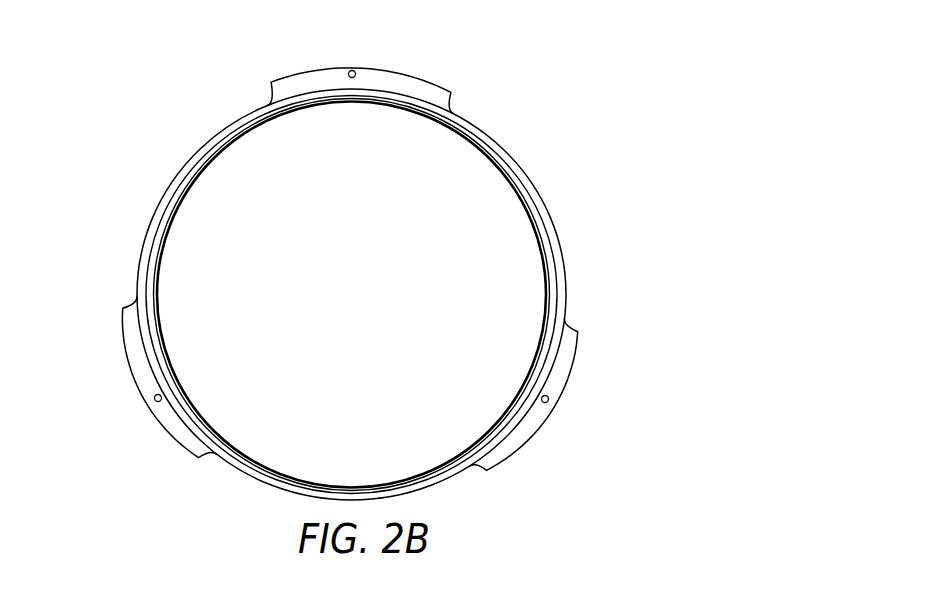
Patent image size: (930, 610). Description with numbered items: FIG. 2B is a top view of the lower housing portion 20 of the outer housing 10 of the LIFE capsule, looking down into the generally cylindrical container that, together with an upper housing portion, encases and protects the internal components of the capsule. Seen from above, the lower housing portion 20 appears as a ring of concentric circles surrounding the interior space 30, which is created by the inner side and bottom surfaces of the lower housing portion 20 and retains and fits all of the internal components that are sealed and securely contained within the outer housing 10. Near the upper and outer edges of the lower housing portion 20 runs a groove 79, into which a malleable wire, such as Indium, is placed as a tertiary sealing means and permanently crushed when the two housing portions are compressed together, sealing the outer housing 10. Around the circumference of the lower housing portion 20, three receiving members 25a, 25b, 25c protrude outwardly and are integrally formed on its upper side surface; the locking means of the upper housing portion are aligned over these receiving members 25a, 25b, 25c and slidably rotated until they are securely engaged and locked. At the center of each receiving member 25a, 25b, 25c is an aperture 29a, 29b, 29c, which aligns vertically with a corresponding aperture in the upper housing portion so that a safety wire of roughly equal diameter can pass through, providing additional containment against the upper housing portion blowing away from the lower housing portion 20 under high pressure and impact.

The outer housing 10 is at (351, 262).
The lower housing portion 20 is at (351, 262).
The receiving member 25a is at (129, 377).
The receiving member 25b is at (565, 395).
The receiving member 25c is at (403, 69).
The aperture 29a is at (154, 398).
The aperture 29b is at (548, 400).
The aperture 29c is at (353, 70).
The interior space 30 is at (366, 306).
The groove 79 is at (548, 233).